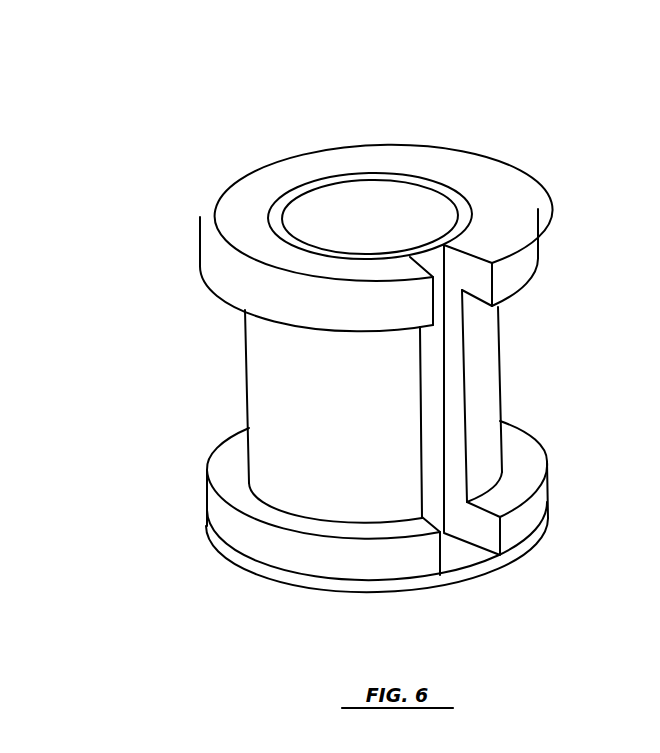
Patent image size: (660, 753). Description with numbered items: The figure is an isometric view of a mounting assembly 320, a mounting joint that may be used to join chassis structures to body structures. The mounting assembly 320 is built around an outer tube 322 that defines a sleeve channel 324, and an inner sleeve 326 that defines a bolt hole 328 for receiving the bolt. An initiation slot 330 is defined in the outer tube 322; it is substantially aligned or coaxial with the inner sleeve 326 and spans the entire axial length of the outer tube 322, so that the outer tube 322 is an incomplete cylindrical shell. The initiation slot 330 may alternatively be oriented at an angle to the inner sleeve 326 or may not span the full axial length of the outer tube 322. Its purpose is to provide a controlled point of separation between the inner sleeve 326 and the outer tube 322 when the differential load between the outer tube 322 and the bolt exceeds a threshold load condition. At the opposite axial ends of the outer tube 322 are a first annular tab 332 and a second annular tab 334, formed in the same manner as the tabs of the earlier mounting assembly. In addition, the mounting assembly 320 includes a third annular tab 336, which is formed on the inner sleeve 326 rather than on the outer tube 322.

The mounting assembly 320 is at (371, 323).
The outer tube 322 is at (287, 403).
The sleeve channel 324 is at (462, 203).
The inner sleeve 326 is at (277, 210).
The bolt hole 328 is at (325, 205).
The initiation slot 330 is at (433, 277).
The first annular tab 332 is at (220, 512).
The second annular tab 334 is at (220, 268).
The third annular tab 336 is at (230, 552).